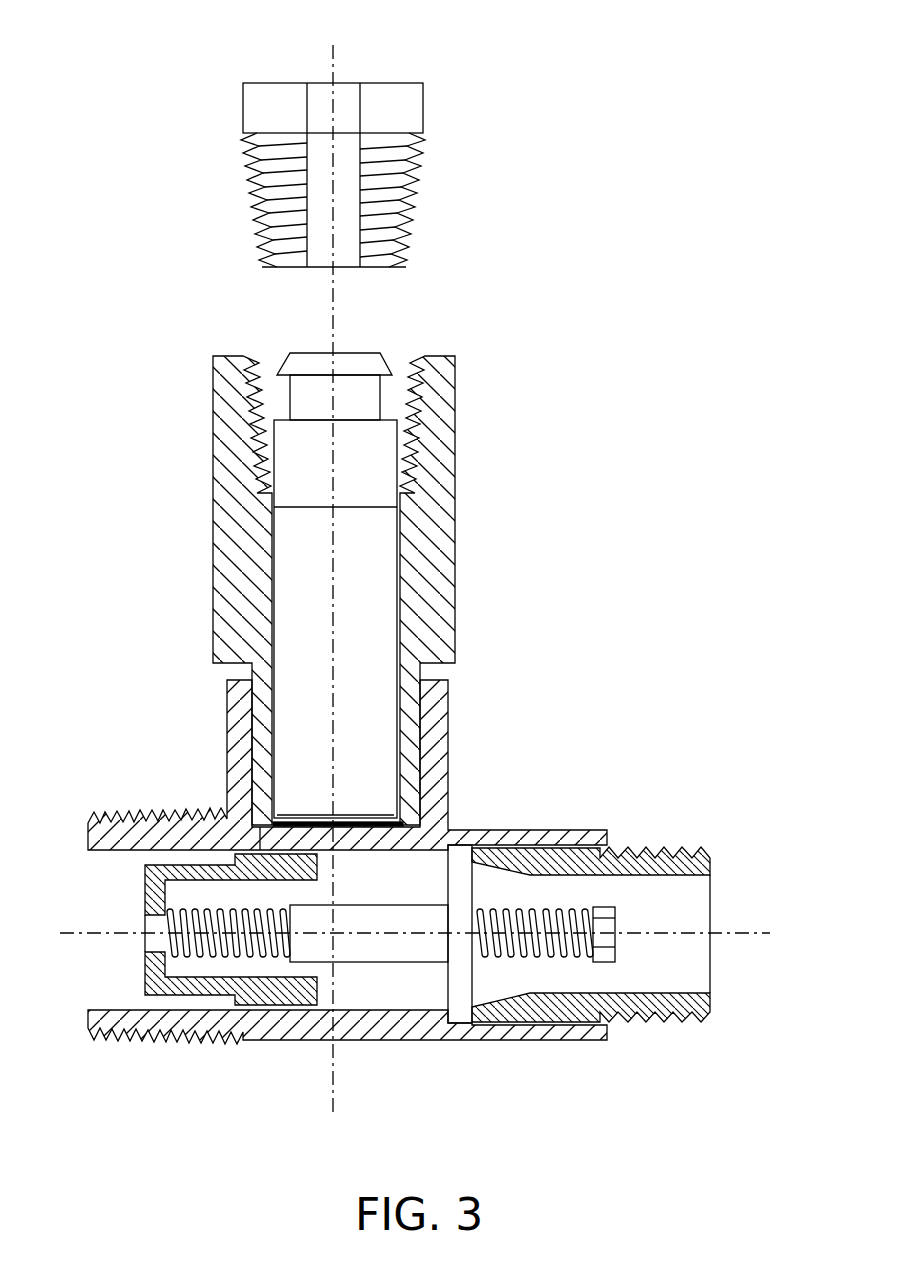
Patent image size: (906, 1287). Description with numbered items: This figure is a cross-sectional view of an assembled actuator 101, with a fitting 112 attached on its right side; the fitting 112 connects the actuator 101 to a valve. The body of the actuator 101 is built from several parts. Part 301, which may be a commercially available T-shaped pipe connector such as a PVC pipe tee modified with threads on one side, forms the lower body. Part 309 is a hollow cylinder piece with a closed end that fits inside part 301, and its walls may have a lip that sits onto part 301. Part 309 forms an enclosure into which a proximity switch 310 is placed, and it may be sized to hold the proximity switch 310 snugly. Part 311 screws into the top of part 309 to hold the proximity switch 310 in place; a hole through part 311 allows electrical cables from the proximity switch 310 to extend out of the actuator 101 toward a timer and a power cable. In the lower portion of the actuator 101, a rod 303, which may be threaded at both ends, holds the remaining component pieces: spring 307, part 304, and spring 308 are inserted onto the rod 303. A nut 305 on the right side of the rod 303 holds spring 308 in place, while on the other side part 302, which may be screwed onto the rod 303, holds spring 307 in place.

The actuator 101 is at (415, 584).
The fitting 112 is at (689, 1020).
The part (T-shaped pipe connector) 301 is at (149, 1039).
The part 302 is at (258, 1014).
The rod 303 is at (276, 961).
The part 304 is at (388, 966).
The nut 305 is at (603, 966).
The spring 307 is at (214, 910).
The spring 308 is at (551, 905).
The part (hollow cylinder piece) 309 is at (212, 537).
The proximity switch 310 is at (359, 607).
The part (screw-in cap) 311 is at (242, 112).